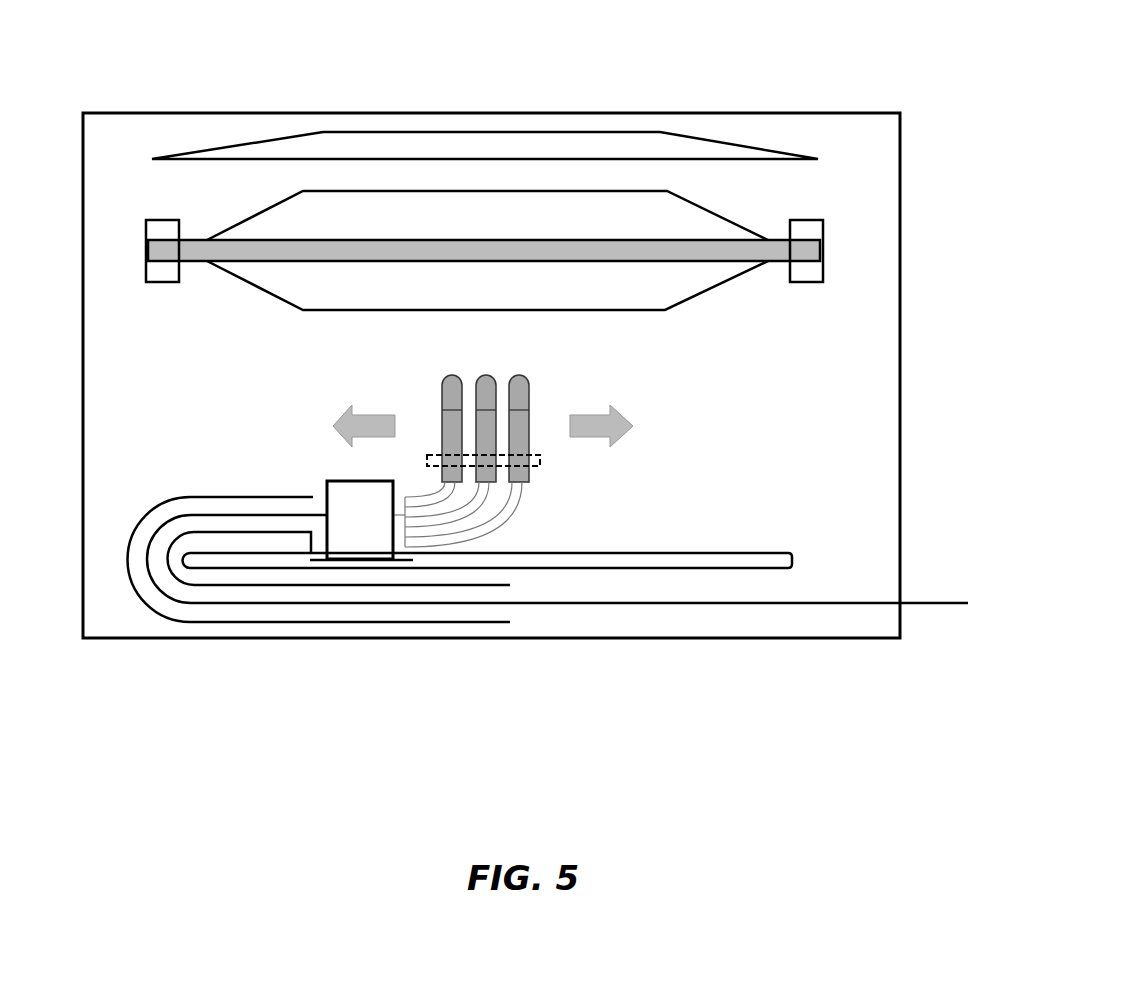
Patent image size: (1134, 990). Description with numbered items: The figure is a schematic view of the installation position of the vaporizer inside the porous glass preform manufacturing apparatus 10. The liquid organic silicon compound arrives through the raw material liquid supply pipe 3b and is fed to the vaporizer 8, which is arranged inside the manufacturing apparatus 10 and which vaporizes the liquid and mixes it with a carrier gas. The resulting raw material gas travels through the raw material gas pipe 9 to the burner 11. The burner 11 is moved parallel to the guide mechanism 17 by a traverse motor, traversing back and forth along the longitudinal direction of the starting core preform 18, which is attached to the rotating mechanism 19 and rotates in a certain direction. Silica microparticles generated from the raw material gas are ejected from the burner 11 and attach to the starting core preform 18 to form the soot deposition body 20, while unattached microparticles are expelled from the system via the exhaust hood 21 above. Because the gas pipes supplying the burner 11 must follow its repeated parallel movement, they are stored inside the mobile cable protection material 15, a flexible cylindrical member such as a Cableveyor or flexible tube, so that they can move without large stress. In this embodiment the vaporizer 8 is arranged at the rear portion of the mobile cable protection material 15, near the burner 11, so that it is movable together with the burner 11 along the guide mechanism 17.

The raw material liquid supply pipe 3b is at (642, 603).
The vaporizer 8 is at (360, 508).
The raw material gas pipe 9 is at (443, 498).
The porous glass preform manufacturing apparatus 10 is at (840, 109).
The burner 11 is at (538, 393).
The mobile cable protection material 15 is at (295, 623).
The guide mechanism 17 is at (700, 553).
The starting core preform 18 is at (698, 262).
The rotating mechanism 19 is at (802, 283).
The soot deposition body 20 is at (643, 311).
The exhaust hood 21 is at (573, 131).